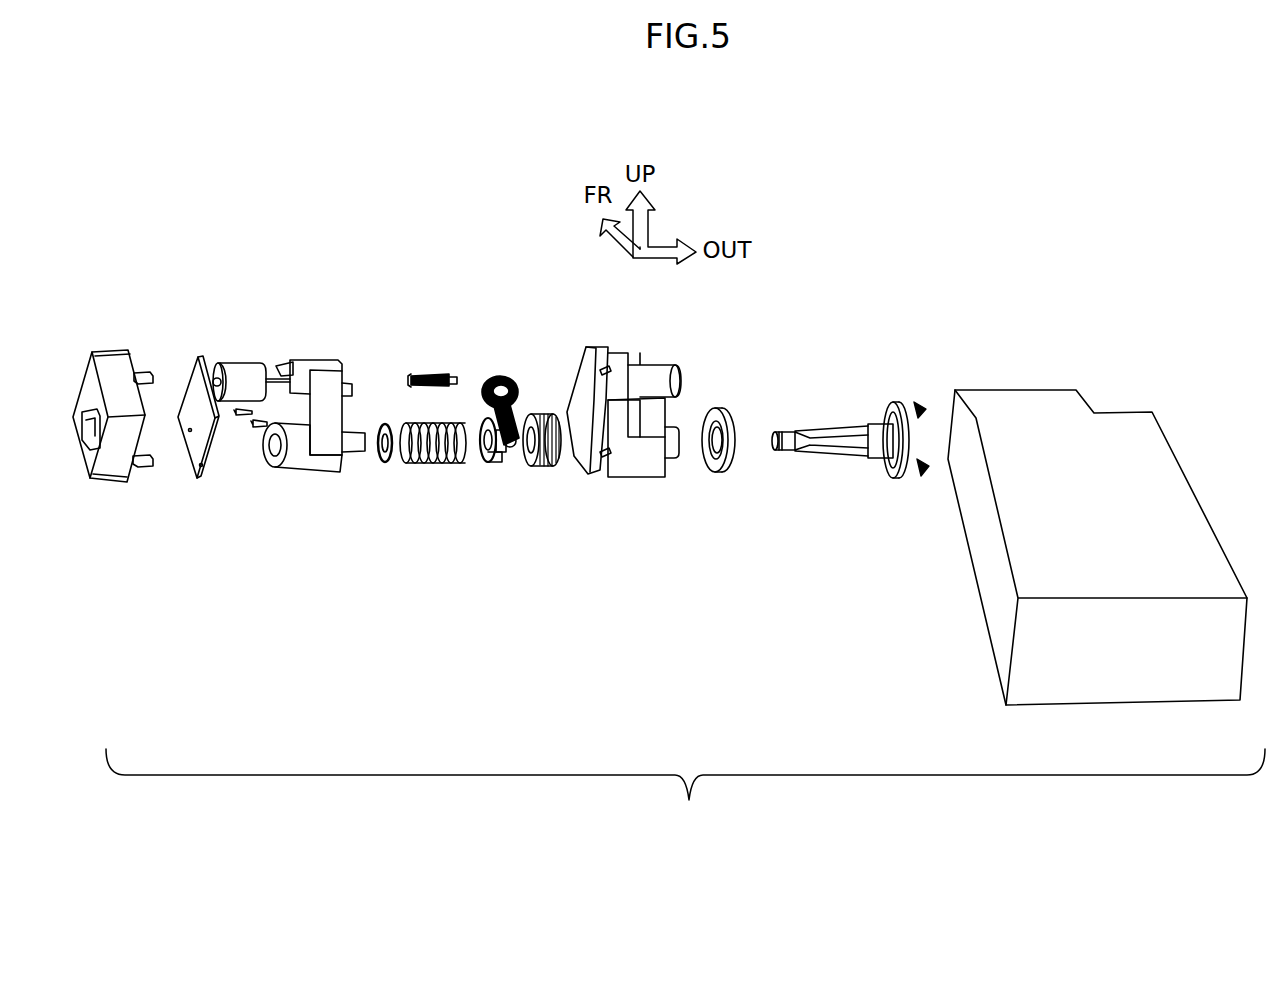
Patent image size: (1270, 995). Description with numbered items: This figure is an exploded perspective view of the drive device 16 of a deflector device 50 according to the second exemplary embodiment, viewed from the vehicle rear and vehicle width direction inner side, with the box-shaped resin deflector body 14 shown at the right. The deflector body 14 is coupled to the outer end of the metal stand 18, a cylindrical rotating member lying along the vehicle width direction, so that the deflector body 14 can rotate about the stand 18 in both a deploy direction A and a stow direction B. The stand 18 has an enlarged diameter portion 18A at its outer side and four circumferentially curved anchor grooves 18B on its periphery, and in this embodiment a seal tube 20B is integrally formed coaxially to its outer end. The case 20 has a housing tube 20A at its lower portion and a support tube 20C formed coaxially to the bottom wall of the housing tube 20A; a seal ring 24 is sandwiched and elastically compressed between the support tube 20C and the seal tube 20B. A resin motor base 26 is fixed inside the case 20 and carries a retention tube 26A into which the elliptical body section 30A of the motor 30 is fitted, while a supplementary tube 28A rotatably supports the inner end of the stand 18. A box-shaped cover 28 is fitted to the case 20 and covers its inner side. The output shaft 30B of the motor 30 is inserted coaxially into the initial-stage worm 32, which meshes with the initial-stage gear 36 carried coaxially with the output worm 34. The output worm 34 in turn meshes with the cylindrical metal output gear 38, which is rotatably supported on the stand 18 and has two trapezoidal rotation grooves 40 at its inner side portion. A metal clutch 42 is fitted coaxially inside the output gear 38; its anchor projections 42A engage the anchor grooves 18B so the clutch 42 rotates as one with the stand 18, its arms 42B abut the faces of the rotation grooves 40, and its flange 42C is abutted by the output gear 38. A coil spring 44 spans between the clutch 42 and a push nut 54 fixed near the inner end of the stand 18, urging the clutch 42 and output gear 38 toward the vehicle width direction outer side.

The deflector body 14 is at (1190, 480).
The drive device 16 is at (397, 320).
The stand 18 is at (802, 428).
The enlarged diameter portion 18A is at (868, 422).
The anchor grooves 18B is at (843, 455).
The case 20 is at (605, 343).
The housing tube 20A is at (642, 478).
The seal tube 20B is at (889, 478).
The support tube 20C is at (673, 463).
The seal ring 24 is at (718, 407).
The motor base 26 is at (297, 477).
The retention tube 26A is at (312, 360).
The cover 28 is at (110, 345).
The supplementary tube 28A is at (303, 458).
The motor 30 is at (217, 363).
The body section 30A is at (237, 363).
The output shaft 30B is at (273, 378).
The initial-stage worm 32 is at (432, 370).
The output worm 34 is at (507, 400).
The initial-stage gear 36 is at (497, 383).
The output gear 38 is at (547, 467).
The rotation grooves 40 is at (527, 423).
The clutch 42 is at (508, 447).
The anchor projections 42A is at (483, 437).
The arms 42B is at (503, 460).
The flange 42C is at (487, 460).
The coil spring 44 is at (415, 467).
The deflector device 50 is at (1068, 222).
The push nut 54 is at (385, 423).
The deploy direction A is at (923, 476).
The stow direction B is at (921, 407).